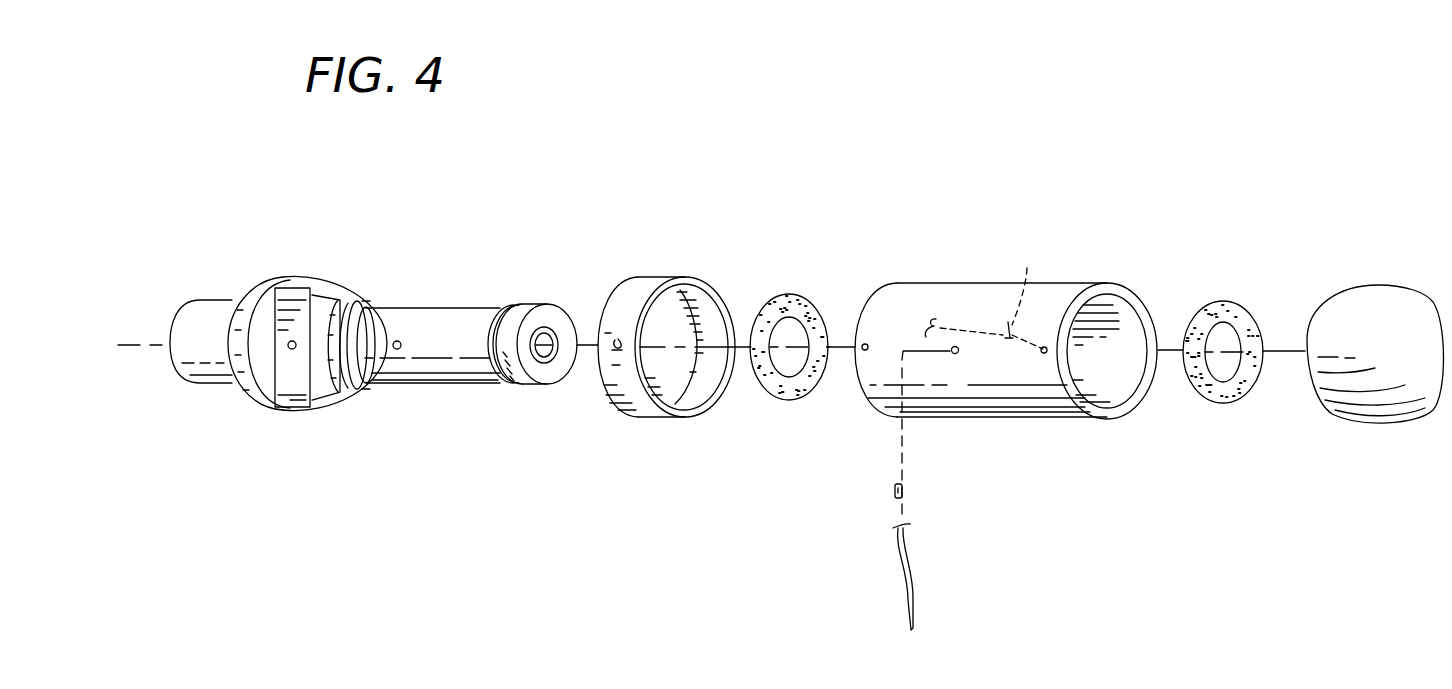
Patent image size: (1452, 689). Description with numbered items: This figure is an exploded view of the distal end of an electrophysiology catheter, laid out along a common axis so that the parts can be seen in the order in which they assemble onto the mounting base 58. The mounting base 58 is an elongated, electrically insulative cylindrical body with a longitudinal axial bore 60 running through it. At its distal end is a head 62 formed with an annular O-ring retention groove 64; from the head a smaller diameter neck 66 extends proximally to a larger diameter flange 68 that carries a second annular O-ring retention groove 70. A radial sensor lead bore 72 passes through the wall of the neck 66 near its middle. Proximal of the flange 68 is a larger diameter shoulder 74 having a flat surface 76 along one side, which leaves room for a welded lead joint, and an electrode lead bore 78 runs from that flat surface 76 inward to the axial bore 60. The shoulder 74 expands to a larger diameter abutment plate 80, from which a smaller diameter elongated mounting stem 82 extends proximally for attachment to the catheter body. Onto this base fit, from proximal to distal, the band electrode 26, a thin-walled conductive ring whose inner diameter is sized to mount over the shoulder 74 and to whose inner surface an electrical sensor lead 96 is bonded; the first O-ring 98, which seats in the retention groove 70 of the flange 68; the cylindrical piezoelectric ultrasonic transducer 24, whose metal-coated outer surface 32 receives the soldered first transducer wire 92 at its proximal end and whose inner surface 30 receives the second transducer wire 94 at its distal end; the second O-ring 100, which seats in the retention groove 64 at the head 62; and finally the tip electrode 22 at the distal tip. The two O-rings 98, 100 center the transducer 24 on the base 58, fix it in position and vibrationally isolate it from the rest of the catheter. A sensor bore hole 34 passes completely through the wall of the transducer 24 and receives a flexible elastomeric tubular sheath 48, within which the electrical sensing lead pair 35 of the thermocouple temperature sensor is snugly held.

The tip electrode 22 is at (1389, 293).
The cylindrical ultrasonic transducer 24 is at (961, 292).
The band electrode 26 is at (650, 285).
The inner surface 30 is at (1133, 320).
The outer surface 32 is at (1048, 405).
The sensor bore hole 34 is at (958, 355).
The electrical sensing lead pair 35 is at (912, 568).
The tubular sheath 48 is at (905, 495).
The mounting base 58 is at (441, 372).
The axial bore 60 is at (548, 362).
The head 62 is at (512, 306).
The O-ring retention groove 64 is at (513, 376).
The neck 66 is at (437, 315).
The flange 68 is at (386, 305).
The O-ring retention groove 70 is at (336, 378).
The sensor lead bore 72 is at (397, 350).
The shoulder 74 is at (302, 290).
The flat surface 76 is at (299, 372).
The electrode lead bore 78 is at (288, 344).
The abutment plate 80 is at (256, 396).
The mounting stem 82 is at (210, 385).
The first transducer wire 92 is at (838, 300).
The second transducer wire 94 is at (986, 288).
The electrical sensor lead 96 is at (598, 334).
The first O-ring 98 is at (793, 393).
The second O-ring 100 is at (1222, 395).